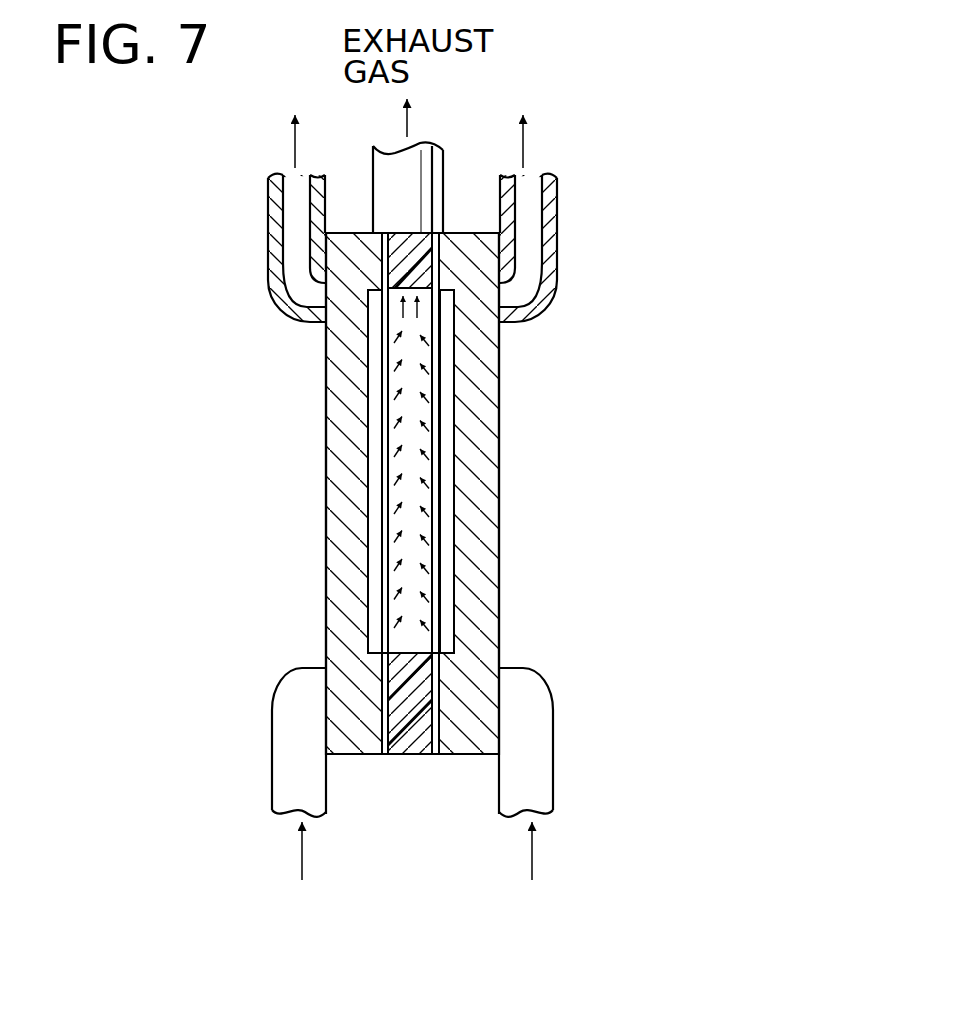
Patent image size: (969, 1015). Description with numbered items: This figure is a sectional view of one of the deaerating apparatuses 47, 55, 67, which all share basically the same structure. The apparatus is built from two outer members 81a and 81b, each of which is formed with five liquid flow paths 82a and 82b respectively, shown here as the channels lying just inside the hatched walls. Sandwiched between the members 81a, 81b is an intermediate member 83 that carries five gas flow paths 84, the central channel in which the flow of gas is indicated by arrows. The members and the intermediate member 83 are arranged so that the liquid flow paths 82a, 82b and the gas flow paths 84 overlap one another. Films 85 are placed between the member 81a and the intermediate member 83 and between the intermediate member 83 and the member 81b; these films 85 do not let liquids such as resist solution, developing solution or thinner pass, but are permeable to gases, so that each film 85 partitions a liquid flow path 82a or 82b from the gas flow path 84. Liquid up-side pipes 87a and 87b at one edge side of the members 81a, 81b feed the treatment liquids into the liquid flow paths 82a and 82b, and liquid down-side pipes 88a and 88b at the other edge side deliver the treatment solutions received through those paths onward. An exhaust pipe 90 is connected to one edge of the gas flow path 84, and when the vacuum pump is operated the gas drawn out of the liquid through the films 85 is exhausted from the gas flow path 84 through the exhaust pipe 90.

The deaerating apparatus 47 is at (551, 428).
The deaerating apparatus 55 is at (551, 428).
The deaerating apparatus 67 is at (604, 182).
The exhaust pipe 90 is at (373, 172).
The liquid down-side pipe 88a is at (268, 225).
The liquid down-side pipe 88b is at (557, 262).
The member 81a is at (326, 393).
The member 81b is at (499, 420).
The liquid flow path 82a is at (375, 487).
The liquid flow path 82b is at (447, 513).
The gas flow path 84 is at (430, 565).
The film 85 is at (390, 668).
The intermediate member 83 is at (418, 756).
The liquid up-side pipe 87a is at (273, 728).
The liquid up-side pipe 87b is at (557, 718).